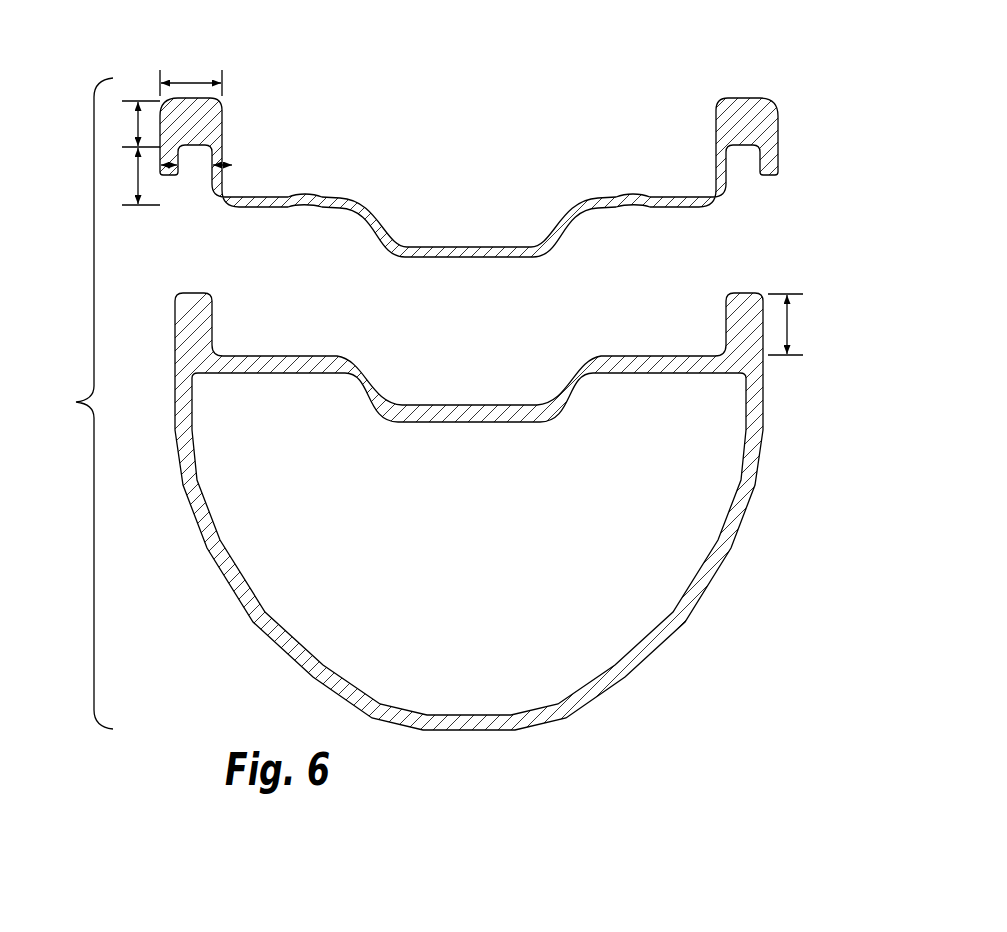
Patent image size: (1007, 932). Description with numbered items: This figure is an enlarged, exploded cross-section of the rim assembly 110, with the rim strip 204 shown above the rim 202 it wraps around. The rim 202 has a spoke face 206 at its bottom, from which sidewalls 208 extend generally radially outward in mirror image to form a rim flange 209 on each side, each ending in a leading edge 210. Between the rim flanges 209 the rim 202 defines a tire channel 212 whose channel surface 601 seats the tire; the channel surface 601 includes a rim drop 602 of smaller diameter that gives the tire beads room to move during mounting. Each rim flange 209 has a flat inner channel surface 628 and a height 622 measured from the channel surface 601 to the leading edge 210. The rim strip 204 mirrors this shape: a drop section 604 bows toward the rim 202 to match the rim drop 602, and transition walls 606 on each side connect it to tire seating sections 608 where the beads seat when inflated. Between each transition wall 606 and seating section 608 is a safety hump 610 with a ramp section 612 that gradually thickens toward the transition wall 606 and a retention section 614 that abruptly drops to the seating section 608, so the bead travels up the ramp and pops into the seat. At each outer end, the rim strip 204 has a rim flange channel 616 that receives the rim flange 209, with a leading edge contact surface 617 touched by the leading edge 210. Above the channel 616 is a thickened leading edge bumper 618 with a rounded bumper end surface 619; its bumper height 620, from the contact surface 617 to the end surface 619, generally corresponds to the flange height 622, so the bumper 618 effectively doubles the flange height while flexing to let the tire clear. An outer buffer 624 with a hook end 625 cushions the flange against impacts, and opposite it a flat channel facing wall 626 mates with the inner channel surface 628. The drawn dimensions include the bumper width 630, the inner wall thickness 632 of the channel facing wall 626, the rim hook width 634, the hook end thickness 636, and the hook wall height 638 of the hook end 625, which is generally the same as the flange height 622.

The rim assembly 110 is at (73, 403).
The rim 202 is at (707, 587).
The rim strip 204 is at (497, 246).
The spoke face 206 is at (520, 731).
The sidewalls 208 is at (193, 518).
The rim flange 209 is at (205, 313).
The leading edge 210 is at (191, 300).
The tire channel 212 is at (441, 388).
The channel surface 601 is at (338, 355).
The rim drop 602 is at (501, 388).
The drop section 604 is at (458, 246).
The transition walls 606 is at (387, 229).
The tire seating sections 608 is at (252, 197).
The safety hump 610 is at (306, 194).
The ramp section 612 is at (343, 198).
The retention section 614 is at (289, 194).
The rim flange channel 616 is at (744, 170).
The leading edge contact surface 617 is at (739, 152).
The leading edge bumper 618 is at (747, 100).
The bumper end surface 619 is at (732, 100).
The bumper height 620 is at (129, 124).
The rim flange height 622 is at (797, 324).
The outer buffer 624 is at (777, 137).
The hook end 625 is at (772, 177).
The channel facing wall 626 is at (222, 127).
The inner channel surface 628 is at (212, 323).
The bumper width 630 is at (191, 71).
The inner wall thickness 632 is at (217, 200).
The rim hook width 634 is at (198, 167).
The hook end thickness 636 is at (171, 182).
The hook wall height 638 is at (129, 176).